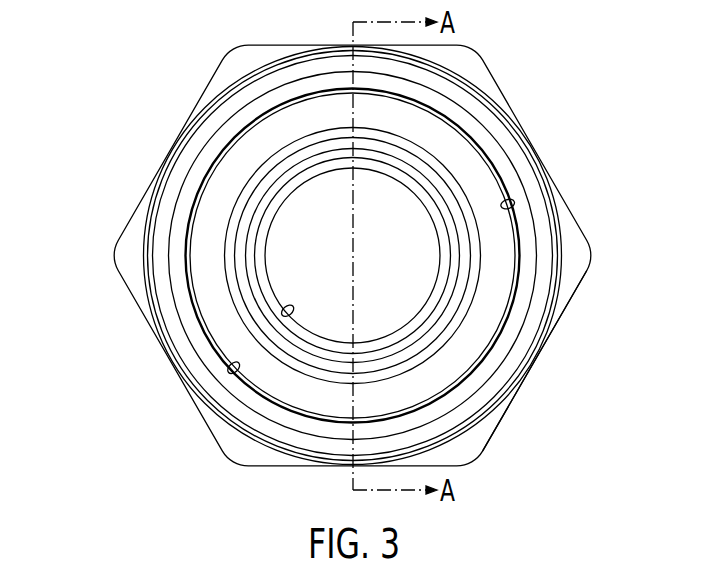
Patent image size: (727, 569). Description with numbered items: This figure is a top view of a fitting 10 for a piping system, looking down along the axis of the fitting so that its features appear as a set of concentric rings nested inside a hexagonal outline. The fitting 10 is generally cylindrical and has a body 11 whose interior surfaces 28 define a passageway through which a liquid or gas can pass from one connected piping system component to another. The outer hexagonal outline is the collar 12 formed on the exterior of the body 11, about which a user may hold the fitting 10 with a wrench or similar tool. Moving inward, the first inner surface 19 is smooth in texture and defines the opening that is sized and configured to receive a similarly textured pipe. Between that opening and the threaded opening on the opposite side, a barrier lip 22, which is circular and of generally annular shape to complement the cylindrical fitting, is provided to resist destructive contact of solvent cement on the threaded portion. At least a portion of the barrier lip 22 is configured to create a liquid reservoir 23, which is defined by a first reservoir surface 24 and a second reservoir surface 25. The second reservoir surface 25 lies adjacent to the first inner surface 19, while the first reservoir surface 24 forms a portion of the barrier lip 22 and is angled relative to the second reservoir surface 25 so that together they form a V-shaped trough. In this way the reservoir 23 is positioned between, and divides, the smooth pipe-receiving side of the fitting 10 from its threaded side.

The fitting 10 is at (118, 141).
The body 11 is at (541, 144).
The collar 12 is at (575, 290).
The first inner surface 19 is at (515, 206).
The barrier lip 22 is at (386, 157).
The liquid reservoir 23 is at (232, 302).
The first reservoir surface 24 is at (268, 173).
The second reservoir surface 25 is at (198, 258).
The interior surfaces 28 is at (283, 313).